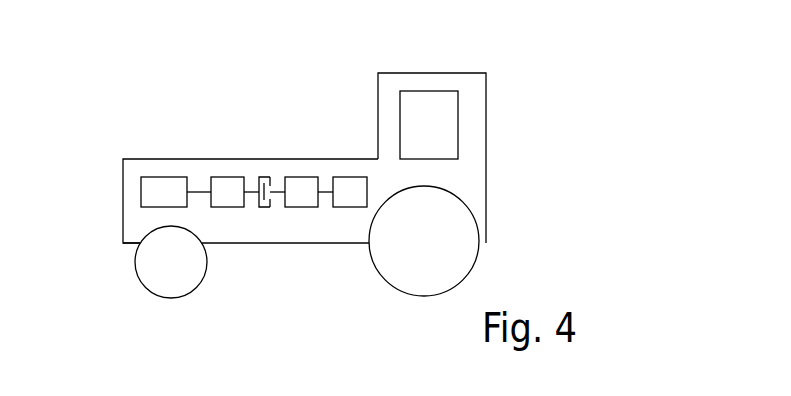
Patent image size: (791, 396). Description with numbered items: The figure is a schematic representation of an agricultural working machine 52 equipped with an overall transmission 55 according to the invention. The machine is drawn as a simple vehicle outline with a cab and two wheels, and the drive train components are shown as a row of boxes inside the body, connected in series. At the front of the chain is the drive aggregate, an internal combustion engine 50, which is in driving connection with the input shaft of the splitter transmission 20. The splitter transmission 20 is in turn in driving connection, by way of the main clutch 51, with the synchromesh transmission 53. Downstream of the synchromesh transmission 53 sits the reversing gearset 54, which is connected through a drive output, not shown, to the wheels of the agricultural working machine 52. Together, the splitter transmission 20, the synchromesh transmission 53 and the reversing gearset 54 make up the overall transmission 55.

The agricultural working machine 52 is at (131, 118).
The internal combustion engine 50 is at (170, 185).
The splitter transmission 20 is at (228, 187).
The main clutch 51 is at (266, 180).
The synchromesh transmission 53 is at (302, 187).
The reversing gearset 54 is at (347, 187).
The overall transmission 55 is at (281, 222).